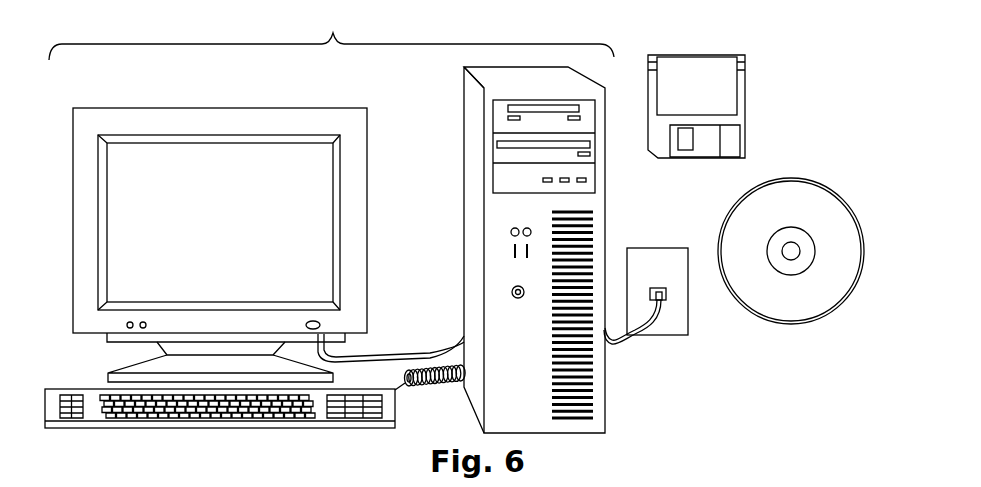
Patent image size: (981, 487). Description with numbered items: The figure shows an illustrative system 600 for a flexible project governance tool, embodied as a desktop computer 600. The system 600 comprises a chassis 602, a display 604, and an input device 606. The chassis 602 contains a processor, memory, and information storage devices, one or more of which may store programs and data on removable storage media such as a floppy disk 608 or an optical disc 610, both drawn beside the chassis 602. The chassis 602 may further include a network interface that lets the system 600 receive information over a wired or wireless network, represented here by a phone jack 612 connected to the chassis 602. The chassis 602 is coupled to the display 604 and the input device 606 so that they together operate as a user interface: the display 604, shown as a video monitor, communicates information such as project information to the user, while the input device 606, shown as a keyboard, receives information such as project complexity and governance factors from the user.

The system 600 is at (331, 32).
The chassis 602 is at (463, 288).
The display 604 is at (93, 337).
The input device 606 is at (88, 430).
The floppy disk 608 is at (745, 140).
The optical disc 610 is at (818, 164).
The phone jack 612 is at (649, 249).